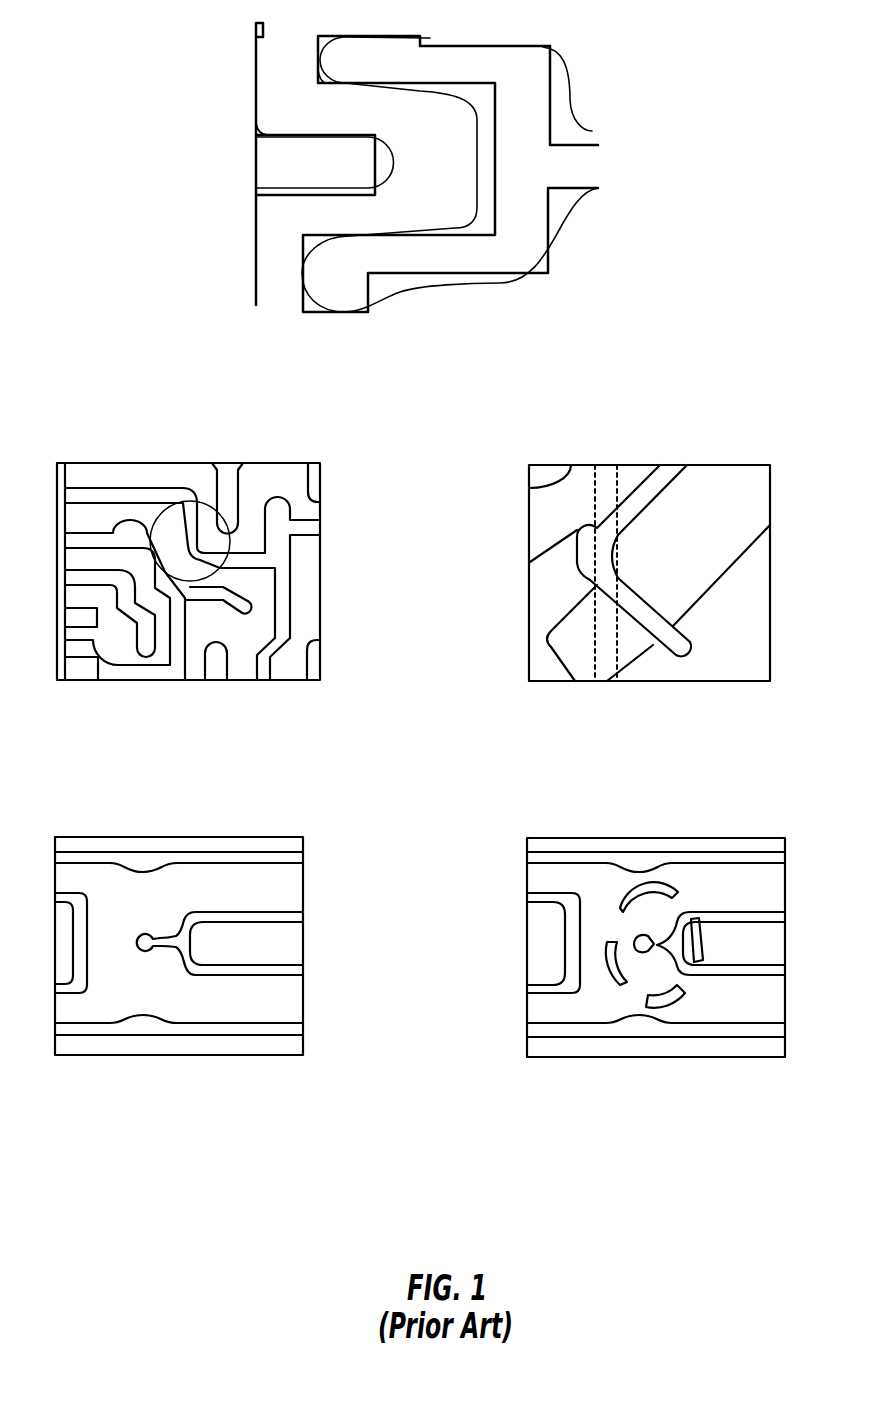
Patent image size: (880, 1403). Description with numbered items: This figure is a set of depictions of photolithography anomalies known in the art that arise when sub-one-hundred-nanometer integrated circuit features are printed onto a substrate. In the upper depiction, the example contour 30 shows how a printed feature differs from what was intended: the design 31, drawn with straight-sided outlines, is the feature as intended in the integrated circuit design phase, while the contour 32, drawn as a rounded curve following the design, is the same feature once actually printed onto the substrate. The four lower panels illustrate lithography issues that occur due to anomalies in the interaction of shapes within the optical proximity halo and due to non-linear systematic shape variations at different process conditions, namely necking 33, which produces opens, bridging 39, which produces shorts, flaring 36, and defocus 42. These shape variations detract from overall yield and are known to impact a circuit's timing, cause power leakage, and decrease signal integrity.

The example contour 30 is at (407, 236).
The design 31 is at (362, 197).
The contour 32 is at (395, 153).
The necking 33 is at (202, 802).
The flaring 36 is at (652, 766).
The bridging 39 is at (200, 1203).
The defocus 42 is at (650, 1166).